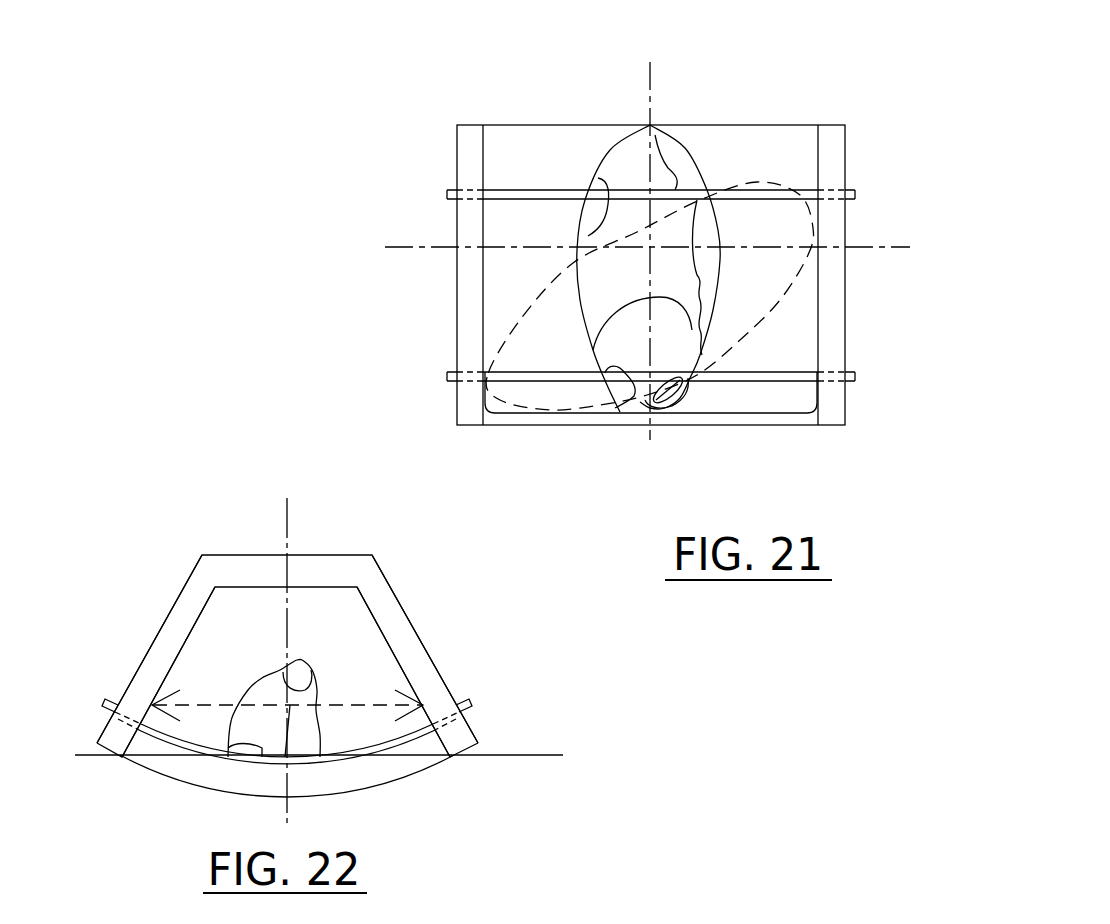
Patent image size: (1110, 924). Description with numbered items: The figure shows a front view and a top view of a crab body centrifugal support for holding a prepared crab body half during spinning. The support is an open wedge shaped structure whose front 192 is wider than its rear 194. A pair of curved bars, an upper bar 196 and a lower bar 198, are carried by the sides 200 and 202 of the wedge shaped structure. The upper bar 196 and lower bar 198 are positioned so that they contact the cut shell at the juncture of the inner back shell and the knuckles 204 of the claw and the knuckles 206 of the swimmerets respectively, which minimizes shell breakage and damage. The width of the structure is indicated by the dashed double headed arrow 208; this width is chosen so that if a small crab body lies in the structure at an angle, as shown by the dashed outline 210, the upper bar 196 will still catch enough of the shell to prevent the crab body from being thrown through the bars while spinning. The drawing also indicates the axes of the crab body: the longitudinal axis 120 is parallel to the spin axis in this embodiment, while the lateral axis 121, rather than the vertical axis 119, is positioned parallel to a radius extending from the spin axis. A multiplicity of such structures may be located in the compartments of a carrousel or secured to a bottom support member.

In FIG. 21, the vertical axis 119 is at (420, 247).
In FIG. 21, the longitudinal axis 120 is at (648, 95).
In FIG. 22, the lateral axis 121 is at (288, 532).
In FIG. 21, the front 192 is at (835, 155).
In FIG. 22, the front 192 is at (155, 773).
In FIG. 22, the rear 194 is at (247, 553).
In FIG. 21, the upper bar 196 is at (763, 205).
In FIG. 22, the upper bar 196 is at (395, 745).
In FIG. 21, the lower bar 198 is at (765, 378).
In FIG. 22, the lower bar 198 is at (348, 780).
In FIG. 21, the side 200 is at (470, 163).
In FIG. 22, the side 200 is at (173, 635).
In FIG. 22, the side 202 is at (408, 653).
In FIG. 21, the knuckles of the claw 204 is at (705, 190).
In FIG. 21, the knuckles of the swimmerets 206 is at (680, 398).
In FIG. 22, the dashed double headed arrow 208 is at (217, 703).
In FIG. 21, the dashed outline 210 is at (520, 323).